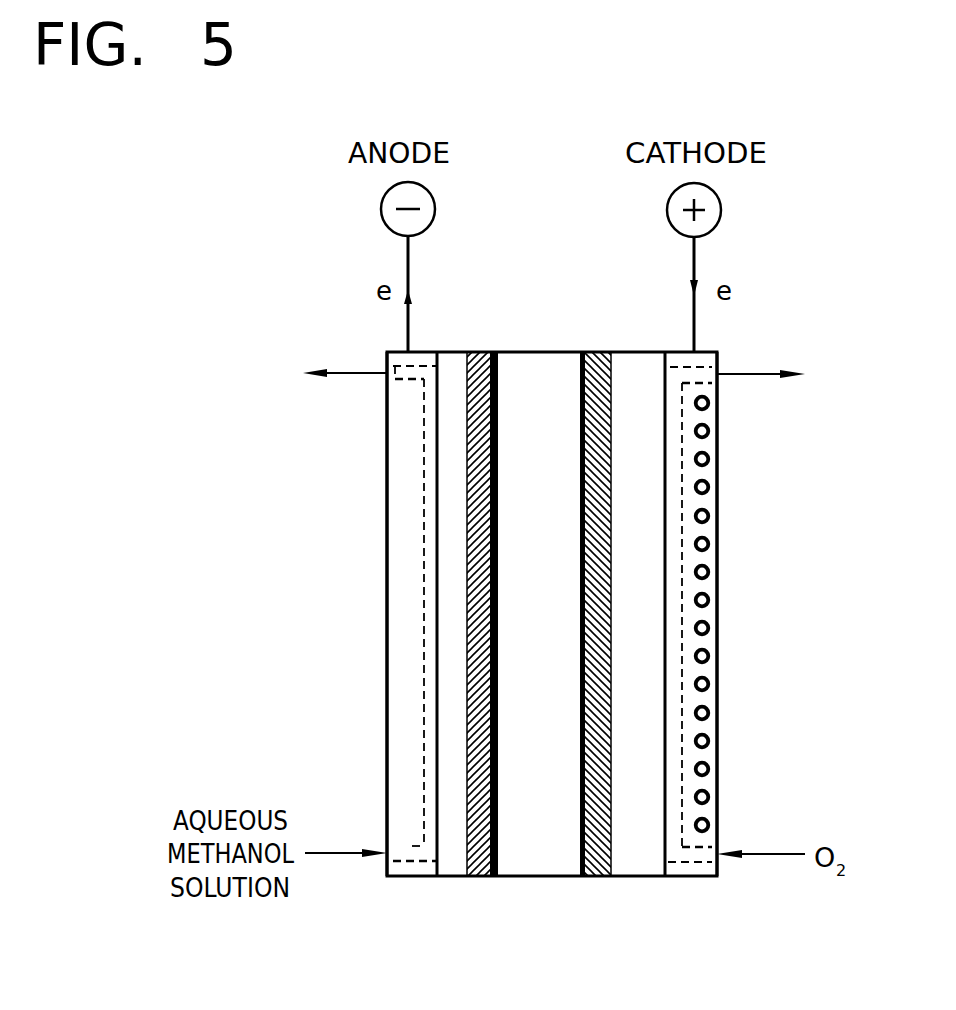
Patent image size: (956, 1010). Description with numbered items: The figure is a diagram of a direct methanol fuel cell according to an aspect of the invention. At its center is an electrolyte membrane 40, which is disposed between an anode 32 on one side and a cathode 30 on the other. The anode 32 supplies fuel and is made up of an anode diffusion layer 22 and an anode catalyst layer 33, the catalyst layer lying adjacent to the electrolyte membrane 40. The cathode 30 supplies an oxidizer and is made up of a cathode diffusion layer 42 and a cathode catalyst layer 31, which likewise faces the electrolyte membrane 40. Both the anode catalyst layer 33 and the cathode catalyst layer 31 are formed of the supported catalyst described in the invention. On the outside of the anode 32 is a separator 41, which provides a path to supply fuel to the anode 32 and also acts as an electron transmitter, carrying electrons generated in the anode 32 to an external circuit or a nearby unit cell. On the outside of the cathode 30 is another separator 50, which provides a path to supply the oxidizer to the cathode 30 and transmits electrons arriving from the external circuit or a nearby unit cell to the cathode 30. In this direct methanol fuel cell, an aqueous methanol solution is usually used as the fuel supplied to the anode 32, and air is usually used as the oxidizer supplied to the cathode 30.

The anode diffusion layer 22 is at (453, 501).
The cathode 30 is at (633, 343).
The cathode catalyst layer 31 is at (595, 858).
The anode 32 is at (488, 344).
The anode catalyst layer 33 is at (481, 858).
The electrolyte membrane 40 is at (538, 855).
The separator 41 is at (410, 586).
The cathode diffusion layer 42 is at (645, 504).
The separator 50 is at (700, 588).